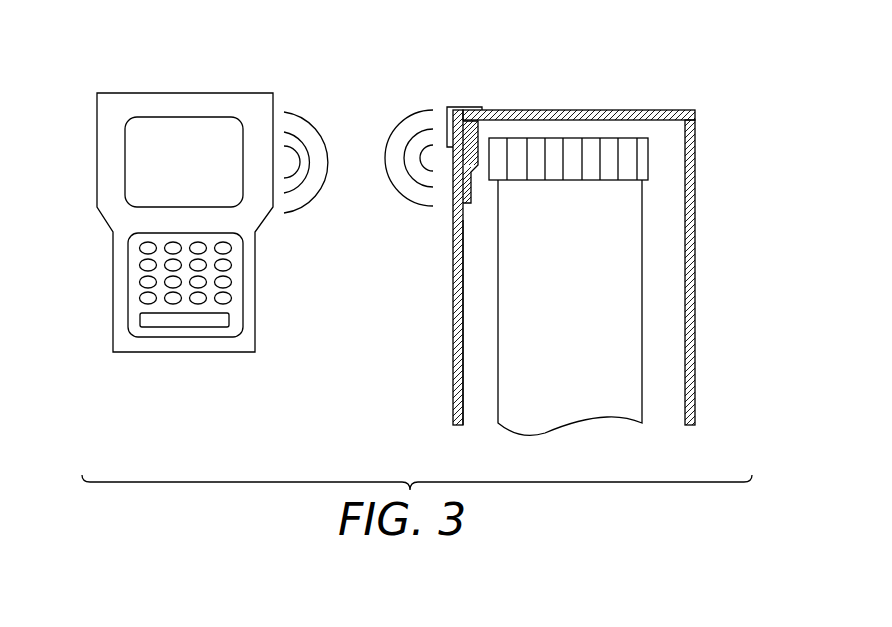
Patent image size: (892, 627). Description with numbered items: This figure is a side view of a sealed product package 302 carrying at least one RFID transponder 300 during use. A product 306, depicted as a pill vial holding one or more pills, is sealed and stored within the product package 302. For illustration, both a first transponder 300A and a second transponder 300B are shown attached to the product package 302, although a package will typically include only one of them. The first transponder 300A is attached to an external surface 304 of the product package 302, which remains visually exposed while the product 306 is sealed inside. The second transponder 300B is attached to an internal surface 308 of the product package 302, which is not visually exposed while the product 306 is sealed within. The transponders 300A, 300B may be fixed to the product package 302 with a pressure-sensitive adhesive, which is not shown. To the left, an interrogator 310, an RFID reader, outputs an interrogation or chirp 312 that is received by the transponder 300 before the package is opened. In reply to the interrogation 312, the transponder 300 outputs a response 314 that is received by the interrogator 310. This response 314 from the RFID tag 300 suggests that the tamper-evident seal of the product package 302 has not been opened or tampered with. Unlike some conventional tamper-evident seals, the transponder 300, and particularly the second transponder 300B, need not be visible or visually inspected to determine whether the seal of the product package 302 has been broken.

The transponder 300 is at (513, 118).
The first transponder 300A is at (467, 103).
The second transponder 300B is at (477, 137).
The product package 302 is at (577, 262).
The external surface 304 is at (453, 308).
The product 306 is at (630, 266).
The internal surface 308 is at (464, 402).
The interrogator 310 is at (125, 105).
The interrogation 312 is at (302, 81).
The response 314 is at (413, 101).